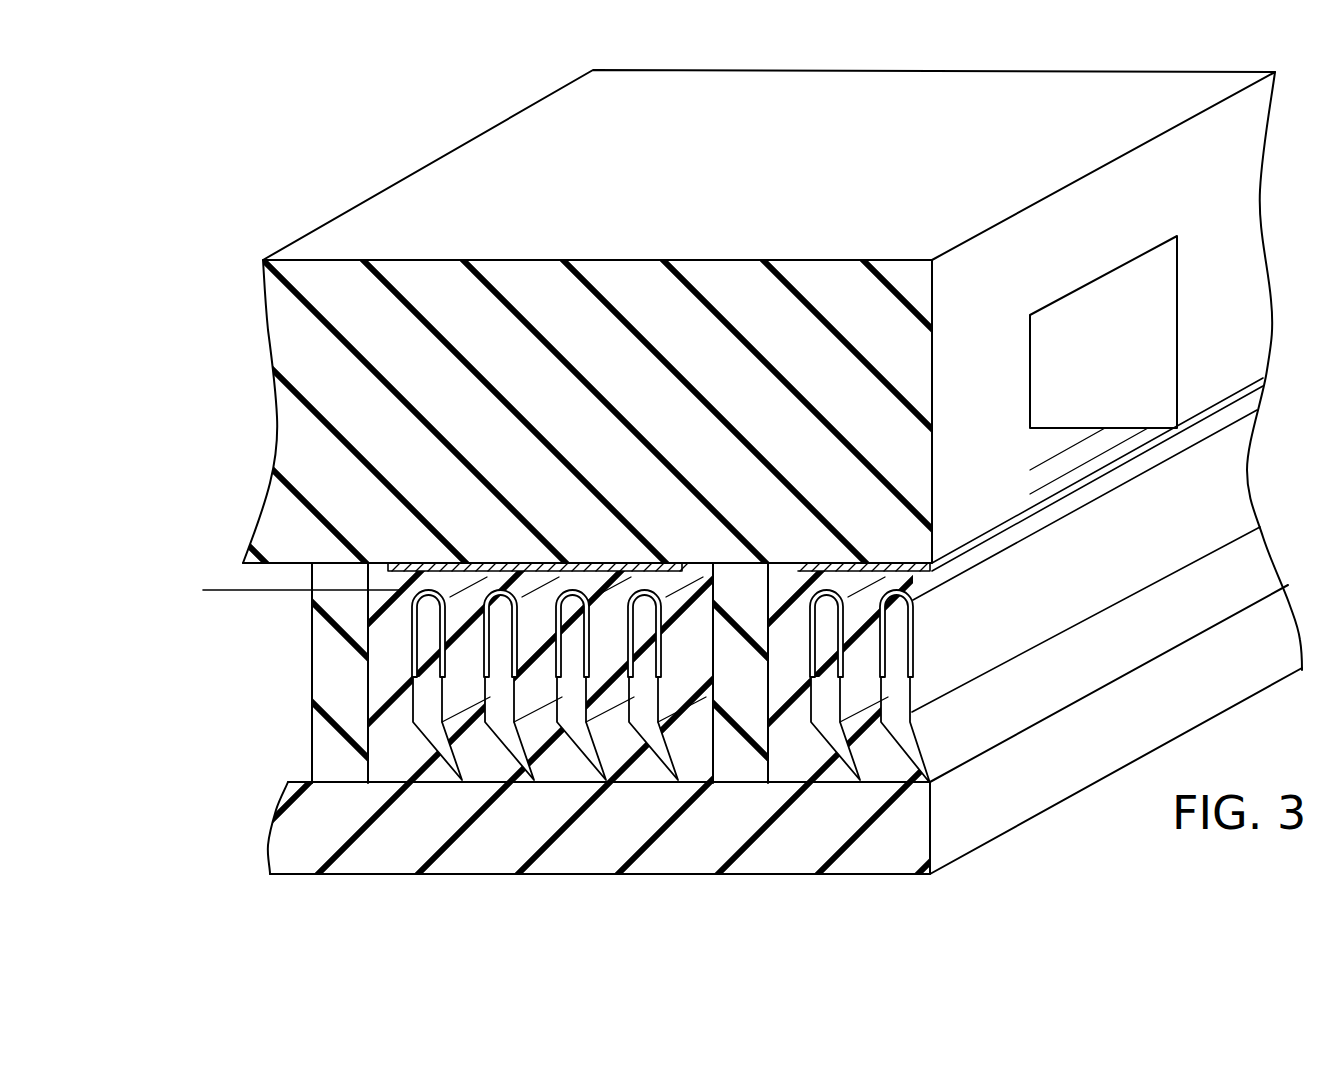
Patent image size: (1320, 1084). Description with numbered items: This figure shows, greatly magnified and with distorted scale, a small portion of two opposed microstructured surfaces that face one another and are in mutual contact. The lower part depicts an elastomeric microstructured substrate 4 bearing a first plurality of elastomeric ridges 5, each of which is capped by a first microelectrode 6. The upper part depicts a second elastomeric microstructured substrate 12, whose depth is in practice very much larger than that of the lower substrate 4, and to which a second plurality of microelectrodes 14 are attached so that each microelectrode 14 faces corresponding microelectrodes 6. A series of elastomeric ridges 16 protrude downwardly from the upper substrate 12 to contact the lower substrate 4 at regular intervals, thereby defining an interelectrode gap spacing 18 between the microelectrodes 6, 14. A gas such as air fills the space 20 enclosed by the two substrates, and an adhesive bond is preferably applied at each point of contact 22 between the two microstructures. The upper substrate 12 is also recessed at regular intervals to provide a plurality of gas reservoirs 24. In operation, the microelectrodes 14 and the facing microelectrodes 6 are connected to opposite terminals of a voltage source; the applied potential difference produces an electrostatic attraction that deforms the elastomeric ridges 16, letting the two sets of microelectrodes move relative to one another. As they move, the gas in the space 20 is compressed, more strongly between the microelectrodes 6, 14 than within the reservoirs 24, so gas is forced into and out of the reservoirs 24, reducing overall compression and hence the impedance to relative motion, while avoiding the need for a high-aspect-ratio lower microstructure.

The elastomeric microstructured substrate 4 is at (502, 847).
The elastomeric ridges 5 is at (909, 713).
The microelectrode 6 is at (925, 625).
The second elastomeric microstructured substrate 12 is at (306, 467).
The microelectrodes 14 is at (387, 580).
The elastomeric ridges 16 is at (783, 617).
The interelectrode gap spacing 18 is at (223, 633).
The space 20 is at (391, 718).
The point of contact 22 is at (737, 802).
The gas reservoirs 24 is at (1094, 349).